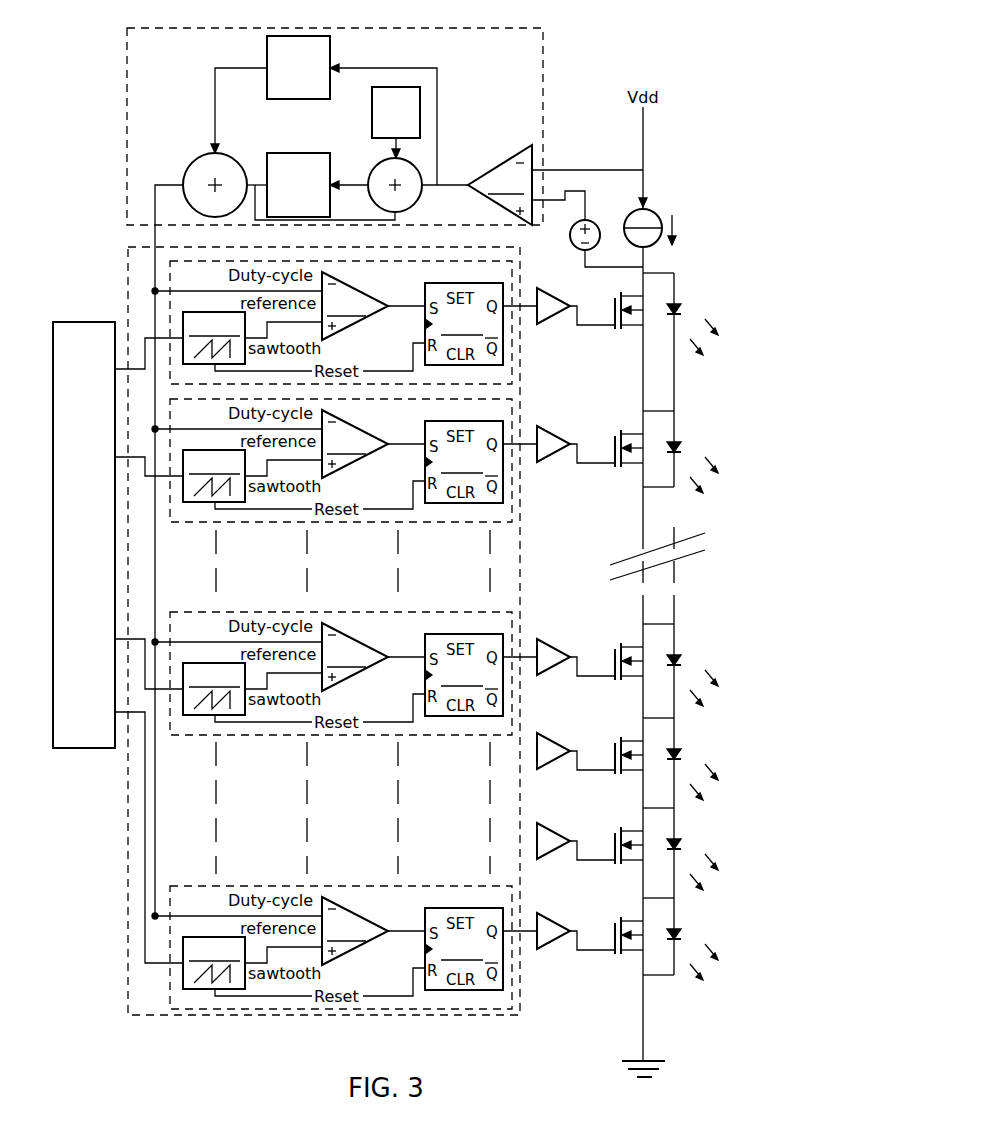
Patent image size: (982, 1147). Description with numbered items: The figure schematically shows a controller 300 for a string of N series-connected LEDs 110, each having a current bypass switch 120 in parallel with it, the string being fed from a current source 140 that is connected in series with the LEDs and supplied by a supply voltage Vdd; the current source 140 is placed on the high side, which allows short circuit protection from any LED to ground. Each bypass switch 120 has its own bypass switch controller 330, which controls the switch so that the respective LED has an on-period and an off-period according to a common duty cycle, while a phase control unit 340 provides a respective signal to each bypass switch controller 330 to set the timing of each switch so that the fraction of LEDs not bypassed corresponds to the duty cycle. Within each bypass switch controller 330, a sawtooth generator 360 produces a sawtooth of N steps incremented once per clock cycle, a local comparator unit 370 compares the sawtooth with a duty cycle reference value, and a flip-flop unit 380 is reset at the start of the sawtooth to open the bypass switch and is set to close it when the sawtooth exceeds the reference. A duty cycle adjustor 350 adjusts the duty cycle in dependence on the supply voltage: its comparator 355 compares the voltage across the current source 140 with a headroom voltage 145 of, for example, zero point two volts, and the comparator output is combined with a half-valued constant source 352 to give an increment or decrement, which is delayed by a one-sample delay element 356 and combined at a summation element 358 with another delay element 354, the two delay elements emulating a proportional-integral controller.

The LEDs 110 is at (678, 310).
The current bypass switch 120 is at (614, 320).
The current source 140 is at (656, 213).
The headroom voltage 145 is at (594, 221).
The controller 300 is at (96, 150).
The bypass switch controller 330 is at (172, 285).
The phase control unit 340 is at (66, 526).
The duty cycle adjustor 350 is at (128, 74).
The 0.5 source 352 is at (372, 95).
The 1/z element 354 is at (282, 95).
The comparator 355 is at (513, 175).
The 1/z element 356 is at (282, 160).
The summation element 358 is at (199, 164).
The sawtooth generator 360 is at (214, 650).
The local comparator unit 370 is at (355, 618).
The flip-flop unit 380 is at (464, 636).